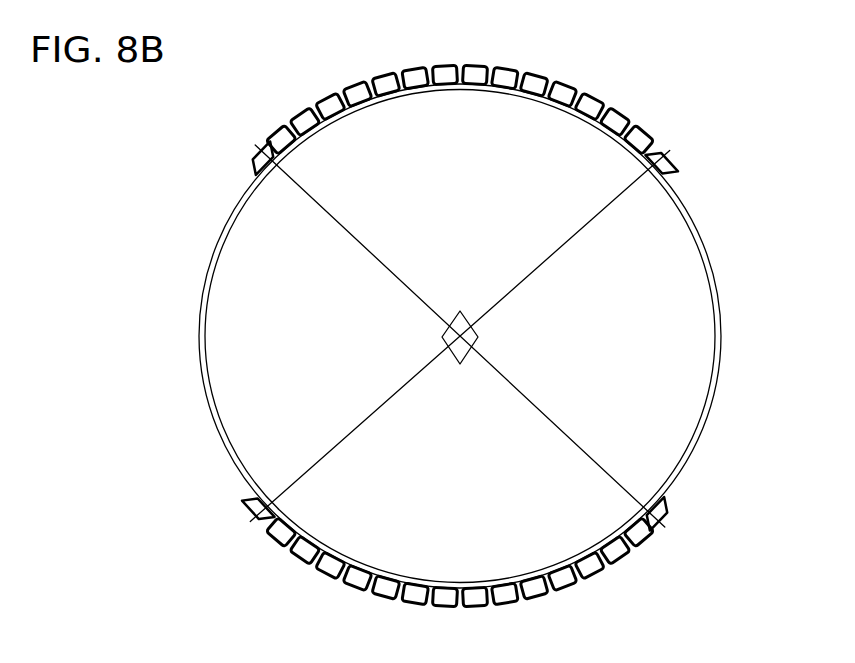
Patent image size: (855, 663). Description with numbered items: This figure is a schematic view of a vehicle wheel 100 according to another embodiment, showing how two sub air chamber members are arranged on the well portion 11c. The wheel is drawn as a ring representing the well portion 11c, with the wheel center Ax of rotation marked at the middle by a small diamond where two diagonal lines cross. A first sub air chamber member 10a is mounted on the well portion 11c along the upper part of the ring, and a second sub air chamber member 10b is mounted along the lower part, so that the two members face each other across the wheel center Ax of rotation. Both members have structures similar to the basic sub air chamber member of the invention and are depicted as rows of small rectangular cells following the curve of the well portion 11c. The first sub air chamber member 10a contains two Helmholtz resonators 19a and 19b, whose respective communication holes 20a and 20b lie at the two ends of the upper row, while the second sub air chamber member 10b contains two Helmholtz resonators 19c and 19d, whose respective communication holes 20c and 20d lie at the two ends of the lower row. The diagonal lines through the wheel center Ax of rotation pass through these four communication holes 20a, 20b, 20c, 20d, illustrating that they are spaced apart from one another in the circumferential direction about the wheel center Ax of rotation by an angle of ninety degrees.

The vehicle wheel 100 is at (726, 272).
The well portion 11c is at (721, 347).
The wheel center of rotation Ax is at (462, 337).
The first sub air chamber member 10a is at (460, 92).
The second sub air chamber member 10b is at (460, 584).
The Helmholtz resonator 19a is at (350, 88).
The Helmholtz resonator 19b is at (573, 88).
The Helmholtz resonator 19c is at (608, 573).
The Helmholtz resonator 19d is at (315, 573).
The communication hole 20a is at (248, 163).
The communication hole 20b is at (672, 163).
The communication hole 20c is at (670, 506).
The communication hole 20d is at (250, 506).